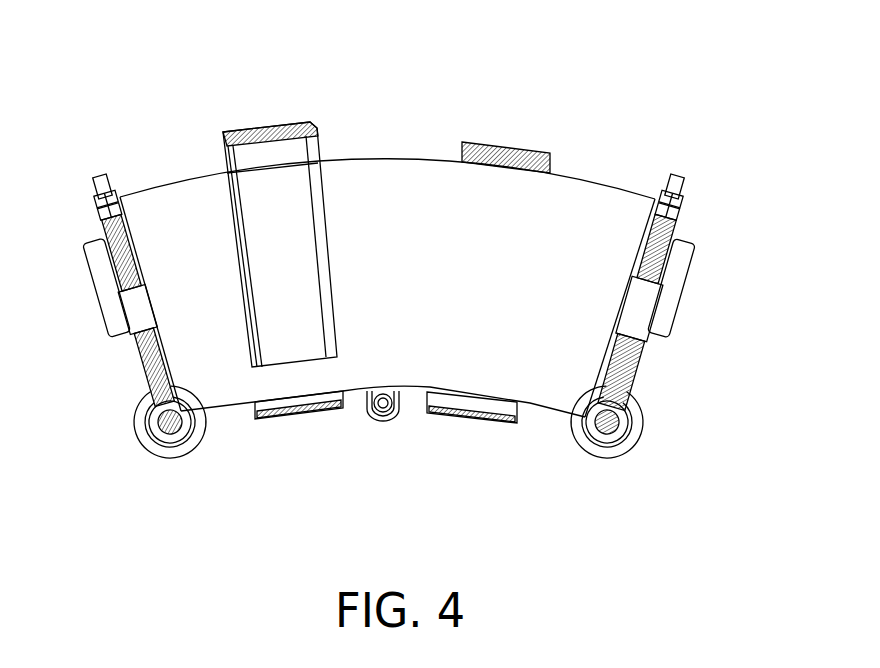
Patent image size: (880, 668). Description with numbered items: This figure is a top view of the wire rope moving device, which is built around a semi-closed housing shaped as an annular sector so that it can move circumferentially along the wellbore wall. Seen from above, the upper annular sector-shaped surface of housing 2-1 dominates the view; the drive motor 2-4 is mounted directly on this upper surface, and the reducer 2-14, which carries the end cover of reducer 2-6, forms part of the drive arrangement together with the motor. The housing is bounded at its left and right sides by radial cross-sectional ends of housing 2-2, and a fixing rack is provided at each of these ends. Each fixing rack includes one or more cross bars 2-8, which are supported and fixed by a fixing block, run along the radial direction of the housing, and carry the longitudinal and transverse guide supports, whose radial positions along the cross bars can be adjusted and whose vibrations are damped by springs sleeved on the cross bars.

The annular sector-shaped surface of housing 2-1 is at (436, 272).
The radial cross-sectional end of housing 2-2 is at (210, 349).
The motor 2-4 is at (312, 275).
The end cover of reducer 2-6 is at (593, 370).
The cross bar 2-8 is at (700, 264).
The reducer 2-14 is at (247, 216).